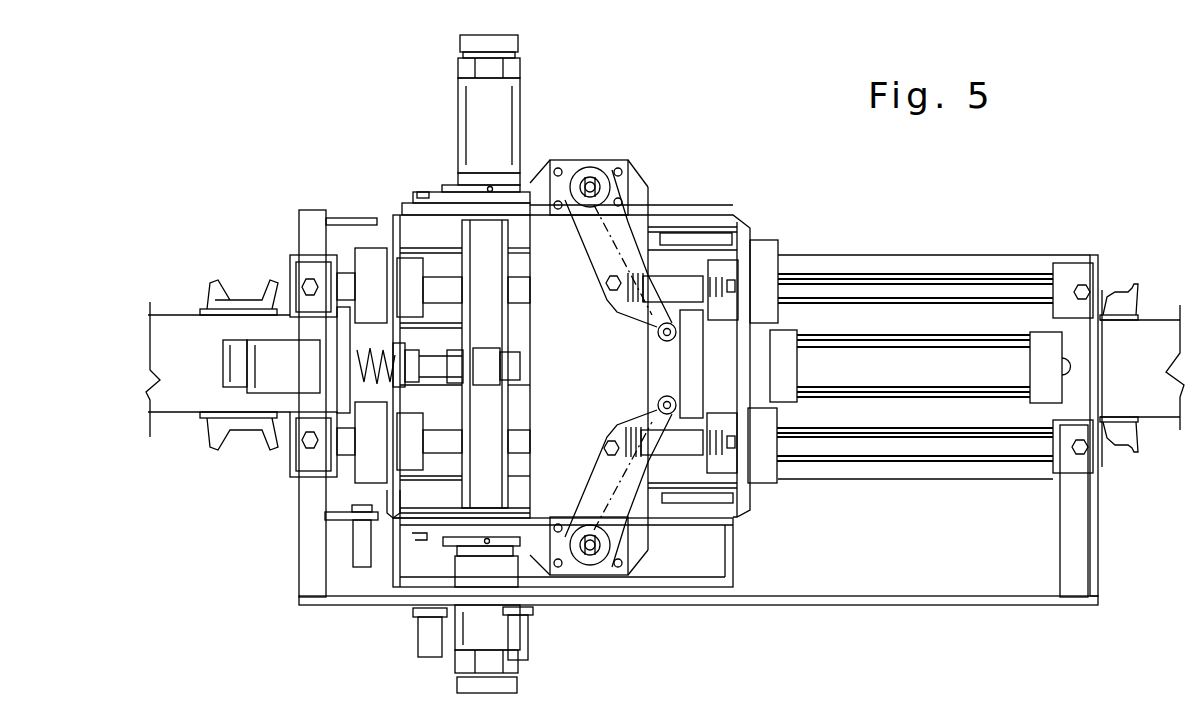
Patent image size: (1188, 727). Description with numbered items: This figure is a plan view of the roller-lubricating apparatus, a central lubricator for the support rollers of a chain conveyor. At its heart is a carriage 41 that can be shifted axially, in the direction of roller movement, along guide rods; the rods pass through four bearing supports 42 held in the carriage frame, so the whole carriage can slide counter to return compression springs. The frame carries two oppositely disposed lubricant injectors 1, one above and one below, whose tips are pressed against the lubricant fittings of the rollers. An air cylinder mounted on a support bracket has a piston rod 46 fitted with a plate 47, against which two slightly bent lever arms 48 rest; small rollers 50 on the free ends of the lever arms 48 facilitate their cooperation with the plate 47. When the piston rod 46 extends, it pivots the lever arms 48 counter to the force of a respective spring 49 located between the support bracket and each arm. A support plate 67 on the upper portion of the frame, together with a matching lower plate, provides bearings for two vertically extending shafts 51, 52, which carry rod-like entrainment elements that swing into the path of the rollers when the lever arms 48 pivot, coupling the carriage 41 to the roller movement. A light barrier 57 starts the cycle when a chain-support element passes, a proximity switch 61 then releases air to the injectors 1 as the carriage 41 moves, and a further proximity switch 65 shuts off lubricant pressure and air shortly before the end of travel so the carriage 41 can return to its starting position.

The lubricant injector 1 is at (474, 112).
The carriage 41 is at (340, 502).
The bearing support 42 is at (372, 270).
The piston rod 46 is at (723, 370).
The plate 47 is at (700, 425).
The lever arm 48 is at (628, 175).
The spring 49 is at (655, 262).
The small roller 50 is at (660, 340).
The vertically extending shaft 51 is at (591, 183).
The vertically extending shaft 52 is at (585, 540).
The light barrier 57 is at (360, 543).
The proximity switch 61 is at (425, 636).
The proximity switch 65 is at (518, 645).
The support plate 67 is at (547, 250).